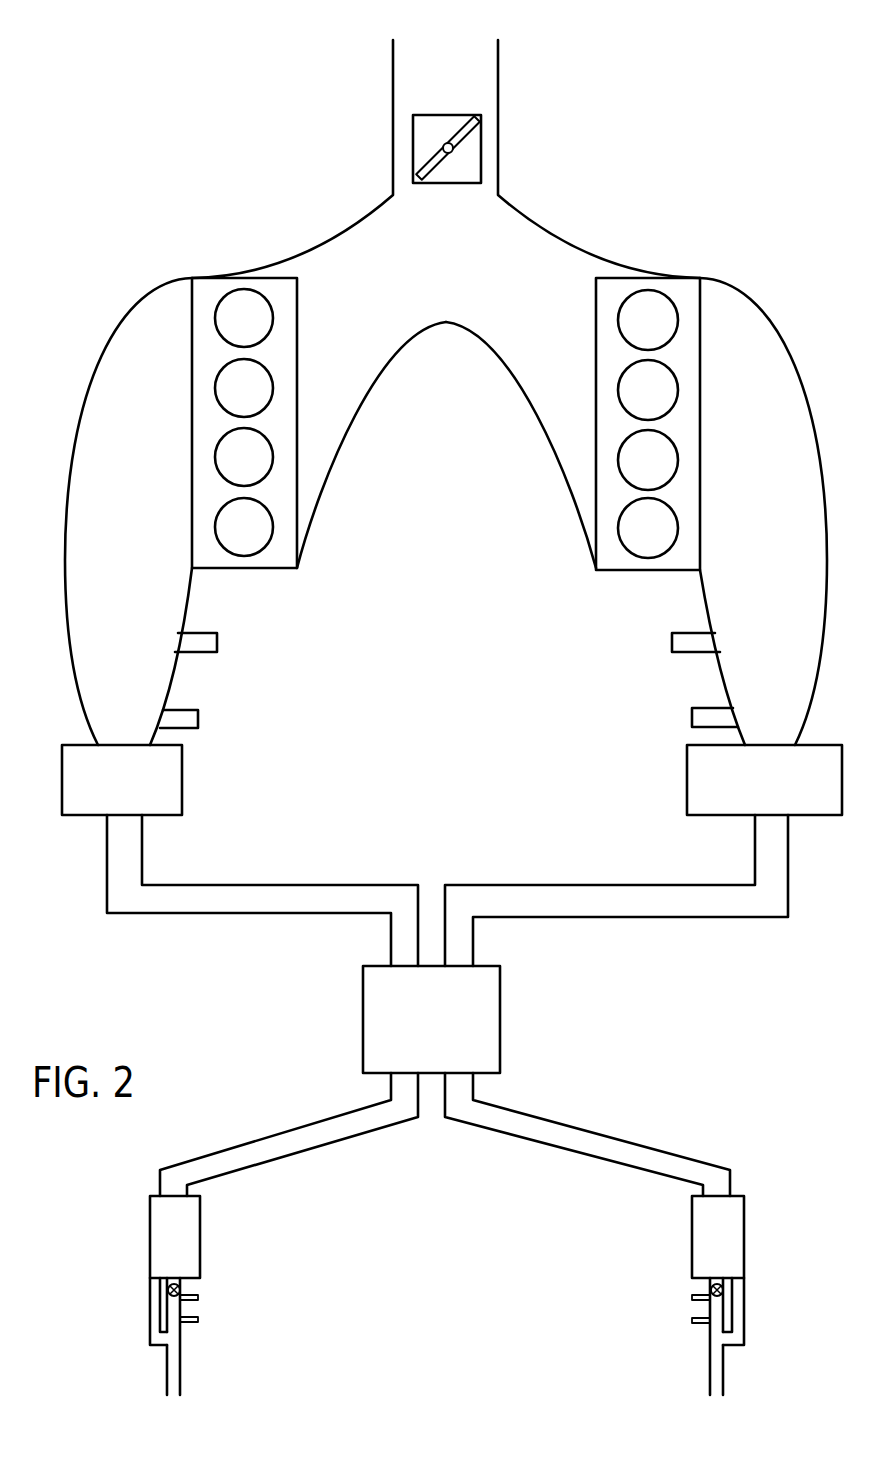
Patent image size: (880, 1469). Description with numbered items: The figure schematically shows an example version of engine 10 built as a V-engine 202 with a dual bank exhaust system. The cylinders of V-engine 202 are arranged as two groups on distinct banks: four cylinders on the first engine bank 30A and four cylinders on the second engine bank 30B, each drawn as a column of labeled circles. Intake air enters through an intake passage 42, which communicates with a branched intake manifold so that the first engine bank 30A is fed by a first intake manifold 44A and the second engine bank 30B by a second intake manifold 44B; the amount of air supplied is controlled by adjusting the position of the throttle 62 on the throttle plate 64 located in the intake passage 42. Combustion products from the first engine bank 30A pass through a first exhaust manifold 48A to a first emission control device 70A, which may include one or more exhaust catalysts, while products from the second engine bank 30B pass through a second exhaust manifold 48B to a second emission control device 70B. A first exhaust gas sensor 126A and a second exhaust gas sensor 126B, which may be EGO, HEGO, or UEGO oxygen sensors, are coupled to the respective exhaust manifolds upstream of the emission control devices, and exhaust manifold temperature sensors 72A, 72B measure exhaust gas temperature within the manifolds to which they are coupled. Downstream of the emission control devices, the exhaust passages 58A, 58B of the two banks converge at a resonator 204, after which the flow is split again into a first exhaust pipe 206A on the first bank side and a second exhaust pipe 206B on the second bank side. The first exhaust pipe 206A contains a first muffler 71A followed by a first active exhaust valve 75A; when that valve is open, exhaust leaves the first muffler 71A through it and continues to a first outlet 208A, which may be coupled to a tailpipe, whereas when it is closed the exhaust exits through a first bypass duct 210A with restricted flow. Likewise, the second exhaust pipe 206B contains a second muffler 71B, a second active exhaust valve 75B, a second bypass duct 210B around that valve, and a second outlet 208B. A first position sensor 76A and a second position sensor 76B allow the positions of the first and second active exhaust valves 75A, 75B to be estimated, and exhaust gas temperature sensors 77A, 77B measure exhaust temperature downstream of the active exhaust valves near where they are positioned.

The engine 10 is at (695, 58).
The V-engine 202 is at (180, 112).
The intake passage 42 is at (472, 88).
The throttle 62 is at (412, 146).
The throttle plate 64 is at (440, 158).
The second engine bank 30B is at (236, 278).
The first engine bank 30A is at (640, 278).
The second intake manifold 44B is at (353, 316).
The first intake manifold 44A is at (578, 316).
The second exhaust manifold 48B is at (140, 610).
The first exhaust manifold 48A is at (788, 611).
The exhaust manifold temperature sensor 72B is at (218, 637).
The exhaust manifold temperature sensor 72A is at (673, 637).
The second exhaust gas sensor 126B is at (188, 710).
The first exhaust gas sensor 126A is at (694, 712).
The second emission control device 70B is at (140, 796).
The first emission control device 70A is at (787, 796).
The exhaust passage 58B is at (282, 884).
The exhaust passage 58A is at (588, 883).
The resonator 204 is at (447, 1033).
The second exhaust pipe 206B is at (310, 1148).
The first exhaust pipe 206A is at (587, 1155).
The second muffler 71B is at (192, 1250).
The first muffler 71A is at (735, 1250).
The second active exhaust valve 75B is at (181, 1284).
The first active exhaust valve 75A is at (712, 1285).
The second position sensor 76B is at (198, 1297).
The first position sensor 76A is at (690, 1297).
The exhaust gas temperature sensor 77B is at (198, 1320).
The exhaust gas temperature sensor 77A is at (690, 1320).
The second bypass duct 210B is at (145, 1297).
The first bypass duct 210A is at (745, 1307).
The second outlet 208B is at (162, 1393).
The first outlet 208A is at (728, 1392).